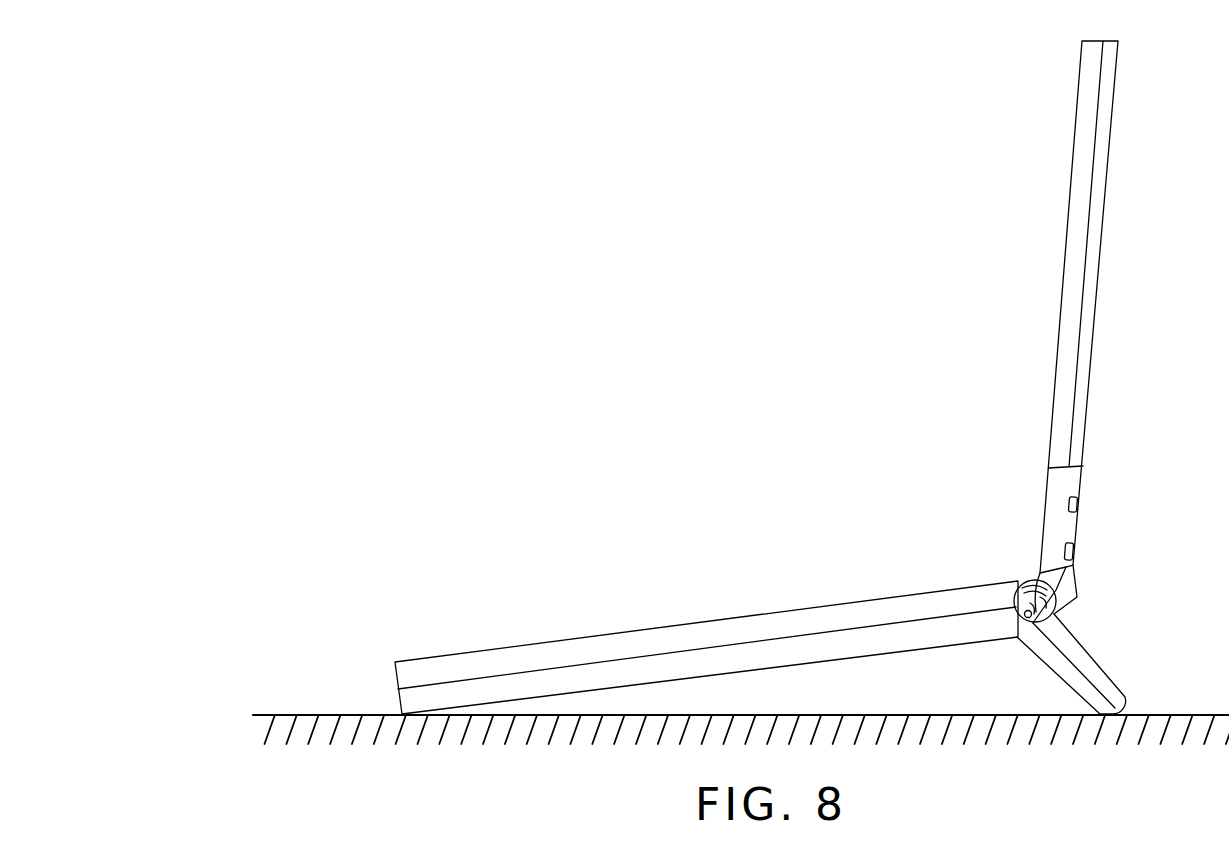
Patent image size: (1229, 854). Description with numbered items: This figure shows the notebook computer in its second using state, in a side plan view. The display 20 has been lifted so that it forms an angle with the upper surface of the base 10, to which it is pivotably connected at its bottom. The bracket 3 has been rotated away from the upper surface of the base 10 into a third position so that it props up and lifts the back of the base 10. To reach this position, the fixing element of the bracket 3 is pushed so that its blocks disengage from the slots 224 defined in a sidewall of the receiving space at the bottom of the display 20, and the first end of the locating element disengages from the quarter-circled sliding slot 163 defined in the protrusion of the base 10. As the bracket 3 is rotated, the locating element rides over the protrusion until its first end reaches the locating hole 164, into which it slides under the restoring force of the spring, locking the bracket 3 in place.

The base 10 is at (908, 612).
The display 20 is at (1077, 267).
The slots 224 is at (1078, 504).
The locating hole 164 is at (1015, 600).
The sliding slot 163 is at (1053, 597).
The bracket 3 is at (1085, 665).